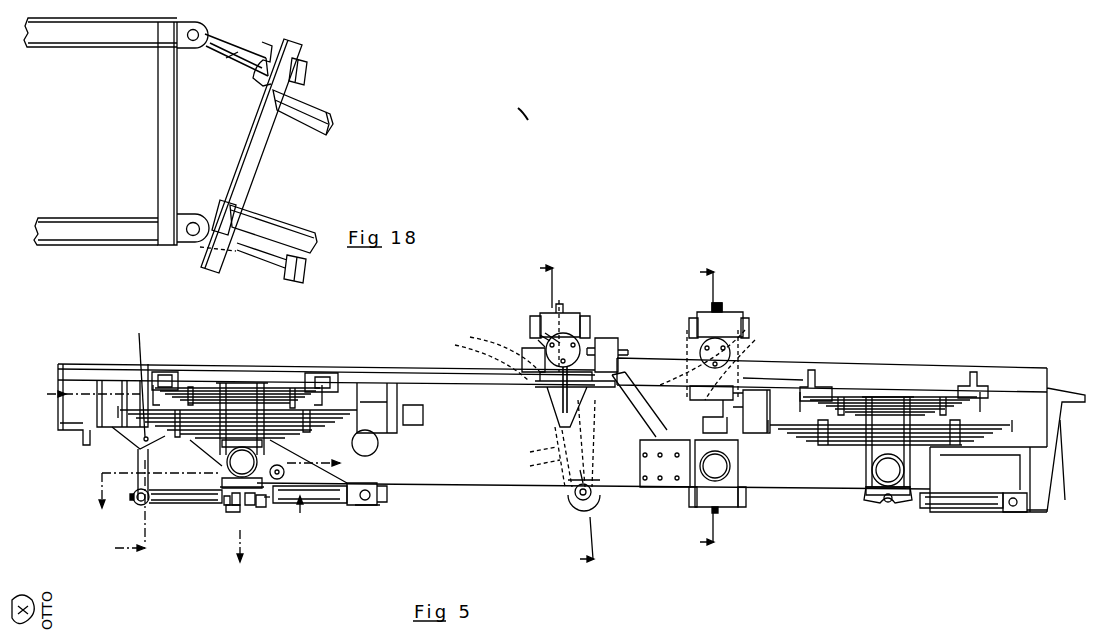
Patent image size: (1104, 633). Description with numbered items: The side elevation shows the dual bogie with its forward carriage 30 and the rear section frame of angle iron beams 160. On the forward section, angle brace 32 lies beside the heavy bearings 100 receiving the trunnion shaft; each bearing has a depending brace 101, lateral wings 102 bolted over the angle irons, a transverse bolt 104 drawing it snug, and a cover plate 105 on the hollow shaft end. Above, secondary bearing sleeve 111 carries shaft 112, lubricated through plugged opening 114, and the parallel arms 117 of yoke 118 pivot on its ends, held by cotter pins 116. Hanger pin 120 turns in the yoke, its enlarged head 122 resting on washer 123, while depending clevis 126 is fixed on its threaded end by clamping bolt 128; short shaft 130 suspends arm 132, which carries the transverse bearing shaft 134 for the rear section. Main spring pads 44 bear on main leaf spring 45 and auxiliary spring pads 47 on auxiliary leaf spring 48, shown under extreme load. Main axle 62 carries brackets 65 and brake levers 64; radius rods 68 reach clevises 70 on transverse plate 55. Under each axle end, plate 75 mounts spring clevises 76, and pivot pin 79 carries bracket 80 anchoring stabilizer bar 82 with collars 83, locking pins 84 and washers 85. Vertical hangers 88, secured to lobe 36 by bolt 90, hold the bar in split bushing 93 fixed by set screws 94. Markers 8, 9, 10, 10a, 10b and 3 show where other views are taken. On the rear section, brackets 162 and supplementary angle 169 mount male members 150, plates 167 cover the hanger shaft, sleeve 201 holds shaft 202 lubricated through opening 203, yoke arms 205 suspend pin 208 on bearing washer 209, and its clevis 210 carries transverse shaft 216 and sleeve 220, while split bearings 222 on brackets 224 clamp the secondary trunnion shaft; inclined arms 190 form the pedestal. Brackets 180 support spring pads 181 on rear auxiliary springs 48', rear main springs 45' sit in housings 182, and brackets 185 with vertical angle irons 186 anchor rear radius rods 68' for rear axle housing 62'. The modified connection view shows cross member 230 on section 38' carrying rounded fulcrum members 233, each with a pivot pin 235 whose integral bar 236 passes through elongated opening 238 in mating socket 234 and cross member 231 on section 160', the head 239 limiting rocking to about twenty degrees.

In FIG. 18, the bogie section member 38' is at (100, 131).
In FIG. 18, the cross member 230 is at (177, 146).
In FIG. 18, the rounded fulcrum member 233 is at (203, 31).
In FIG. 18, the pivot pin 235 is at (222, 40).
In FIG. 18, the cross member 231 is at (268, 151).
In FIG. 18, the mating socket 234 is at (300, 61).
In FIG. 18, the head 239 is at (306, 78).
In FIG. 18, the bar 236 is at (227, 60).
In FIG. 18, the elongated opening 238 is at (331, 120).
In FIG. 18, the bogie section member 160' is at (302, 186).
In FIG. 5, the angle brace 32 is at (412, 368).
In FIG. 5, the main angle iron beam 160 is at (851, 424).
In FIG. 5, the carriage 30 is at (482, 486).
In FIG. 5, the main spring pad 44 is at (95, 385).
In FIG. 5, the bolt 90 is at (144, 378).
In FIG. 5, the auxiliary spring pad 47 is at (170, 372).
In FIG. 5, the auxiliary leaf spring 48 is at (237, 368).
In FIG. 5, the spring clevis 76 is at (223, 383).
In FIG. 5, the main leaf spring 45 is at (246, 385).
In FIG. 5, the main axle 62 is at (242, 464).
In FIG. 5, the brake lever 64 is at (352, 438).
In FIG. 5, the lobe 36 is at (160, 452).
In FIG. 5, the vertical hanger 88 is at (137, 463).
In FIG. 5, the set screw 94 is at (98, 494).
In FIG. 5, the split bushing 93 is at (138, 506).
In FIG. 5, the stabilizer bar 82 is at (178, 503).
In FIG. 5, the collar 83 is at (224, 505).
In FIG. 5, the pivot pin 79 is at (235, 506).
In FIG. 5, the bracket 80 is at (232, 512).
In FIG. 5, the locking pin 84 is at (250, 506).
In FIG. 5, the washer 85 is at (260, 508).
In FIG. 5, the bracket 65 is at (225, 492).
In FIG. 5, the plate 75 is at (266, 505).
In FIG. 5, the radius rod 68 is at (315, 509).
In FIG. 5, the transverse plate 55 is at (376, 503).
In FIG. 5, the clevis 70 is at (368, 506).
In FIG. 5, the section line 10 is at (194, 503).
In FIG. 5, the section line 10a is at (85, 474).
In FIG. 5, the section line 10b is at (297, 522).
In FIG. 5, the section line 8 is at (558, 418).
In FIG. 5, the plugged opening 114 is at (562, 305).
In FIG. 5, the secondary bearing sleeve 111 is at (568, 312).
In FIG. 5, the parallel arm 117 is at (588, 316).
In FIG. 5, the transverse bolt 104 is at (590, 320).
In FIG. 5, the cotter pin 116 is at (545, 333).
In FIG. 5, the shaft 112 is at (540, 336).
In FIG. 5, the cover plate 105 is at (538, 340).
In FIG. 5, the enlarged head 122 is at (494, 345).
In FIG. 5, the washer 123 is at (482, 359).
In FIG. 5, the lateral wing 102 is at (546, 358).
In FIG. 5, the male member 150 is at (615, 340).
In FIG. 5, the vertical bracket 162 is at (622, 346).
In FIG. 5, the supplementary angle 169 is at (622, 357).
In FIG. 5, the yoke 118 is at (548, 400).
In FIG. 5, the bearing 100 is at (558, 420).
In FIG. 5, the depending brace 101 is at (588, 412).
In FIG. 5, the hanger pin 120 is at (590, 426).
In FIG. 5, the clamping bolt 128 is at (531, 451).
In FIG. 5, the depending clevis 126 is at (533, 466).
In FIG. 5, the short shaft 130 is at (568, 494).
In FIG. 5, the arm 132 is at (578, 503).
In FIG. 5, the transverse bearing shaft 134 is at (594, 497).
In FIG. 5, the strut 3 is at (650, 399).
In FIG. 5, the inclined arm 190 is at (660, 488).
In FIG. 5, the section line 9 is at (699, 408).
In FIG. 5, the plugged opening 203 is at (716, 303).
In FIG. 5, the secondary bearing sleeve 201 is at (722, 316).
In FIG. 5, the parallel arm 205 is at (742, 330).
In FIG. 5, the shaft 202 is at (687, 330).
In FIG. 5, the plate 167 is at (735, 352).
In FIG. 5, the vertical pin 208 is at (745, 330).
In FIG. 5, the bearing washer 209 is at (760, 341).
In FIG. 5, the depending clevis 210 is at (740, 442).
In FIG. 5, the split bearing 222 is at (740, 462).
In FIG. 5, the transverse shaft 216 is at (747, 494).
In FIG. 5, the sleeve 220 is at (722, 512).
In FIG. 5, the bracket 224 is at (690, 508).
In FIG. 5, the rear auxiliary spring 48' is at (890, 376).
In FIG. 5, the housing 182 is at (866, 380).
In FIG. 5, the spring pad 181 is at (826, 385).
In FIG. 5, the bracket 180 is at (975, 372).
In FIG. 5, the rear axle housing 62' is at (888, 493).
In FIG. 5, the rear main spring 45' is at (961, 513).
In FIG. 5, the rear radius rod 68' is at (998, 515).
In FIG. 5, the bracket 185 is at (1047, 508).
In FIG. 5, the vertical angle iron 186 is at (1050, 485).